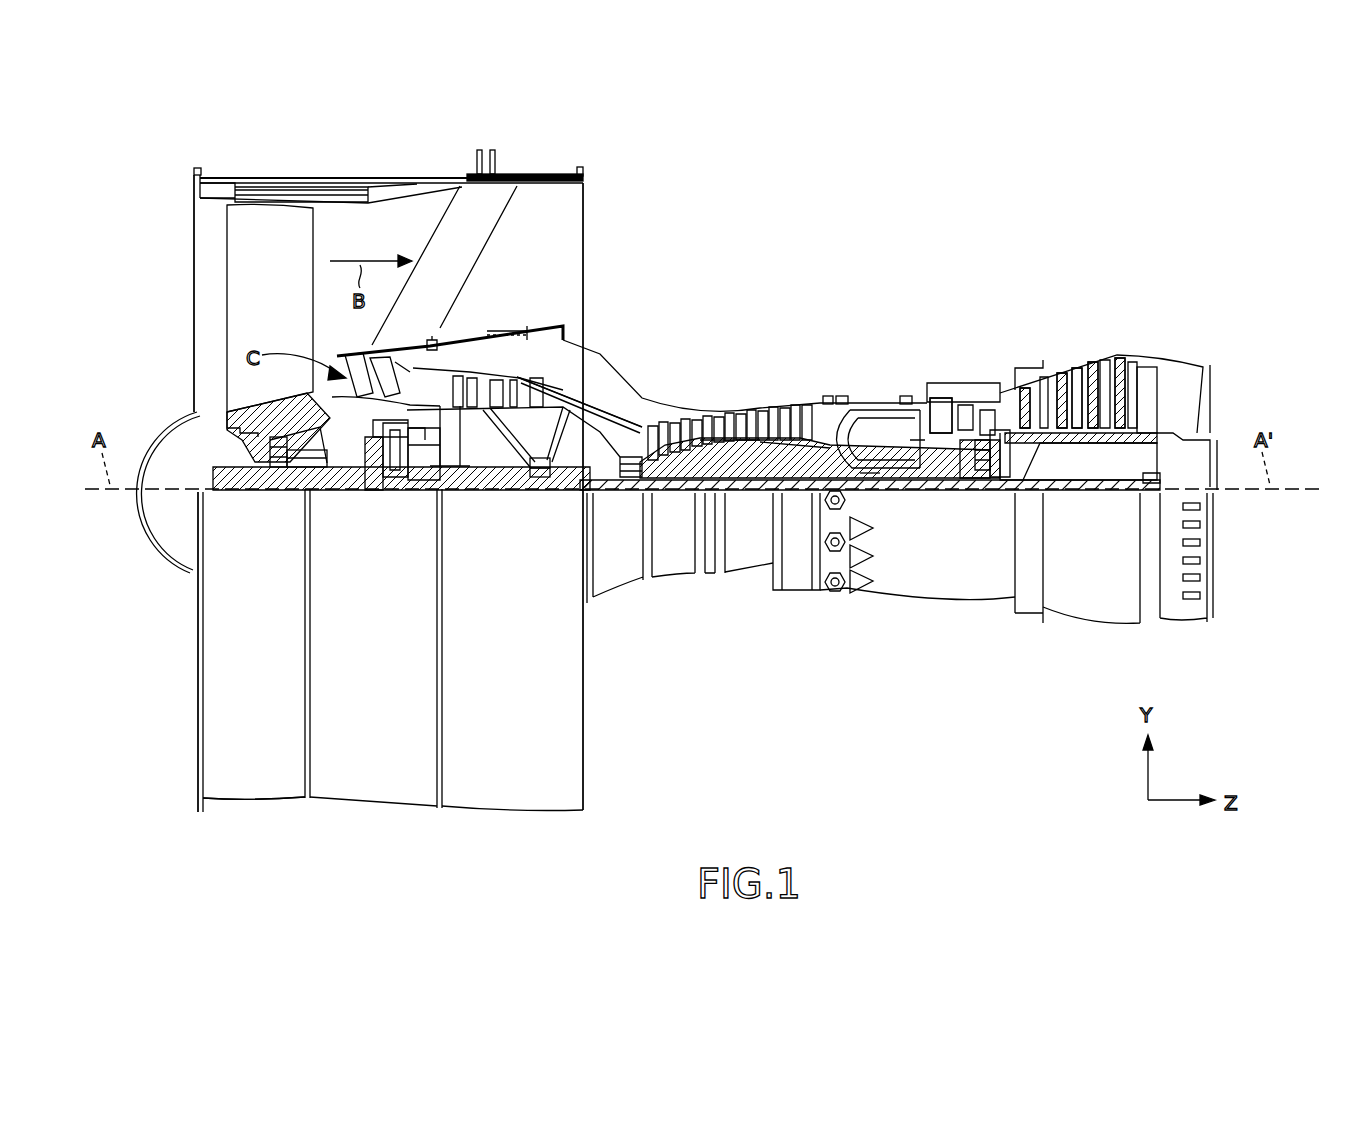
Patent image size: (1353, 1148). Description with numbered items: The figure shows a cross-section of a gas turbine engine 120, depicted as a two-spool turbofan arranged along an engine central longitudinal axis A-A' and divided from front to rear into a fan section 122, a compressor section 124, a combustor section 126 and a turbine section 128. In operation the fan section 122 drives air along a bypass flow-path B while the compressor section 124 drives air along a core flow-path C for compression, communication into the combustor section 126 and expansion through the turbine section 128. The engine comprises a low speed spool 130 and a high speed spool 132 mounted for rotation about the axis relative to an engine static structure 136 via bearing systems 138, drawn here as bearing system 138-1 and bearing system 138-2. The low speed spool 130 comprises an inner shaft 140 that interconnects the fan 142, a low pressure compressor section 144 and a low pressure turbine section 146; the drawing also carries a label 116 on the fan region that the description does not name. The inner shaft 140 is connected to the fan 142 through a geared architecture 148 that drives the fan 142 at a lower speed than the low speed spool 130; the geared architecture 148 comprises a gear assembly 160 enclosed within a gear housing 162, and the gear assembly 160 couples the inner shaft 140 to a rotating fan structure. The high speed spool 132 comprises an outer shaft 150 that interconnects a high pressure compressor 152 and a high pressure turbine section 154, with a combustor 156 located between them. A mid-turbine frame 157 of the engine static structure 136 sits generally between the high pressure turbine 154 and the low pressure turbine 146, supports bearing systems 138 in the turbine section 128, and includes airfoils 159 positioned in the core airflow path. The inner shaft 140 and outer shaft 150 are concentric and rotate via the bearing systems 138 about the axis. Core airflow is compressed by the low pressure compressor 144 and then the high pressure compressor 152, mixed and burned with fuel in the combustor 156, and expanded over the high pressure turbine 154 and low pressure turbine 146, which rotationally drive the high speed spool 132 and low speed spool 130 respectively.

The fan blade 116 is at (368, 782).
The gas turbine engine 120 is at (712, 193).
The fan section 122 is at (435, 156).
The compressor section 124 is at (820, 290).
The combustor section 126 is at (928, 290).
The turbine section 128 is at (1148, 290).
The low speed spool 130 is at (757, 491).
The high speed spool 132 is at (797, 463).
The engine static structure 136 is at (797, 575).
The bearing system 138 is at (985, 497).
The bearing system 138-1 is at (280, 473).
The bearing system 138-2 is at (540, 478).
The inner shaft 140 is at (607, 493).
The fan 142 is at (280, 303).
The low pressure compressor section 144 is at (522, 385).
The low pressure turbine section 146 is at (1078, 375).
The geared architecture 148 is at (403, 495).
The outer shaft 150 is at (870, 475).
The high pressure compressor 152 is at (733, 462).
The high pressure turbine section 154 is at (947, 407).
The combustor 156 is at (872, 430).
The mid-turbine frame 157 is at (987, 420).
The airfoils 159 is at (990, 423).
The gear assembly 160 is at (400, 480).
The gear housing 162 is at (408, 433).